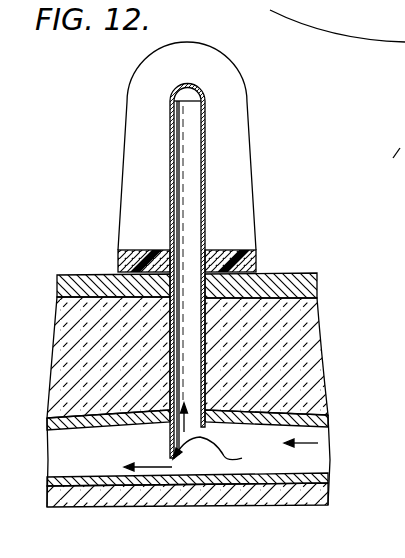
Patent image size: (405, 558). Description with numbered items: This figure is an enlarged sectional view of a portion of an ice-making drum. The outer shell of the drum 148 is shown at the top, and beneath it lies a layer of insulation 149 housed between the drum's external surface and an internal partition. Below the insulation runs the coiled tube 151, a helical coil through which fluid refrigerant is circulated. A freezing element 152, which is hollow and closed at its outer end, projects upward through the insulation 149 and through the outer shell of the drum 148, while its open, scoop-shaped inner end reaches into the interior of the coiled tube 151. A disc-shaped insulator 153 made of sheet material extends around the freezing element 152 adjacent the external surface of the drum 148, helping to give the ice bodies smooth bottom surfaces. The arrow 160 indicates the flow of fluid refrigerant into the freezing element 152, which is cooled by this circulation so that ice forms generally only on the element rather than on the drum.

The drum 148 is at (285, 273).
The layer of insulation 149 is at (300, 345).
The coiled tube 151 is at (172, 445).
The freezing element 152 is at (205, 150).
The disc-shaped insulator 153 is at (127, 254).
The arrow indicating flow of fluid refrigerant 160 is at (227, 455).